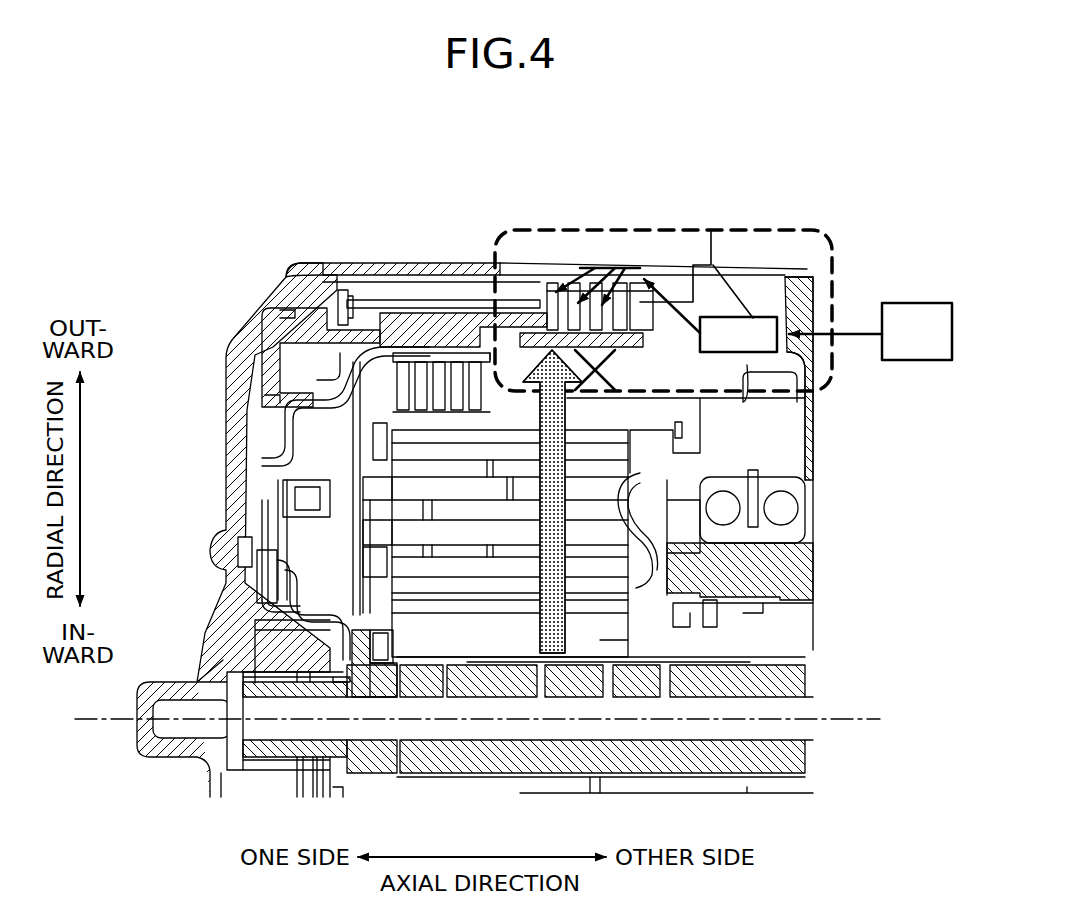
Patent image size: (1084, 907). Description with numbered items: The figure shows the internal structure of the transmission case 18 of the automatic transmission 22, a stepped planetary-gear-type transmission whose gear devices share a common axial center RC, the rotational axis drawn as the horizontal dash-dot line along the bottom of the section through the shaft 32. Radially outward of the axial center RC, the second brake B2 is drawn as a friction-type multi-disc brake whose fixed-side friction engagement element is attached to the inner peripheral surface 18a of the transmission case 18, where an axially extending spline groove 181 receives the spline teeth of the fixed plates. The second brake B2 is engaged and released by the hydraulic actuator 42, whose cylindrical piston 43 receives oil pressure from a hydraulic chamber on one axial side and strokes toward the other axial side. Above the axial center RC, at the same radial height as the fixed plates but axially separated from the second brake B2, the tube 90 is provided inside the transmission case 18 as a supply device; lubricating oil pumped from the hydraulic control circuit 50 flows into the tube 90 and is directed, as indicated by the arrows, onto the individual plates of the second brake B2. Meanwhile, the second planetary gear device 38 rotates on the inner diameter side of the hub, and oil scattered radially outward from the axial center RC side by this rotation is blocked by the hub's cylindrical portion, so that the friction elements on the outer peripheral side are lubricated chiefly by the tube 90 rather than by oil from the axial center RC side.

The automatic transmission 22 is at (276, 174).
The transmission case 18 is at (377, 260).
The inner peripheral surface 18a is at (462, 285).
The hydraulic actuator 42 is at (258, 328).
The piston 43 is at (425, 320).
The second brake B2 is at (612, 246).
The spline groove 181 is at (668, 282).
The tube 90 is at (736, 306).
The hydraulic control circuit 50 is at (918, 302).
The second planetary gear device 38 is at (645, 591).
The shaft 32 is at (800, 683).
The axial center RC is at (84, 724).